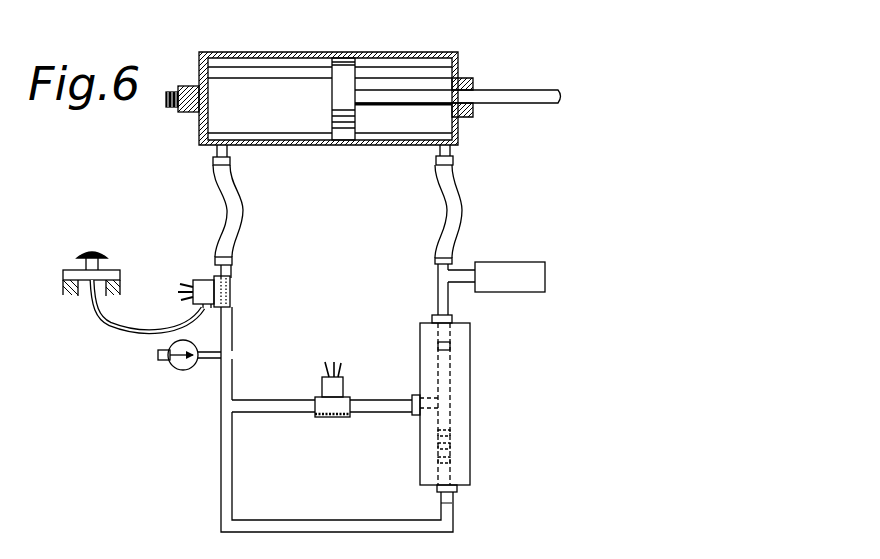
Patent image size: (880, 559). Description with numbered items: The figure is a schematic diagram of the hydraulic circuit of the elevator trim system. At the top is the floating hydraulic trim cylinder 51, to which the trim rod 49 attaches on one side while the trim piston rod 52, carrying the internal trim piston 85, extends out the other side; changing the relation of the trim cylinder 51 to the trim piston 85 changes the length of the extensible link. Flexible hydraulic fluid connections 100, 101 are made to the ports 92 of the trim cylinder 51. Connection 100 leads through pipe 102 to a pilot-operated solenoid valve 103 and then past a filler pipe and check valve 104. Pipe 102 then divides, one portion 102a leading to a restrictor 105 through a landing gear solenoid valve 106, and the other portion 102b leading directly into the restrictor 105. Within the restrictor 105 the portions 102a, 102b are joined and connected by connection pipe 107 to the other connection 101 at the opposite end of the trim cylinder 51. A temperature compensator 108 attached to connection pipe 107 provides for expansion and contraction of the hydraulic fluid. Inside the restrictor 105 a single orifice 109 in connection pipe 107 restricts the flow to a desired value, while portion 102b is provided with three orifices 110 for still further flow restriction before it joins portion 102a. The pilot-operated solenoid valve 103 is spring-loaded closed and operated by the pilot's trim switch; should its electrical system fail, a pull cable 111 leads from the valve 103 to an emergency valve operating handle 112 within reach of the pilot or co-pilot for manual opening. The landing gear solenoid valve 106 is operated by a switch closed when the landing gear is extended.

The hydraulic trim cylinder 51 is at (307, 52).
The trim piston 85 is at (358, 56).
The trim piston rod 52 is at (510, 95).
The trim rod 49 is at (168, 108).
The ports 92 is at (228, 152).
The flexible hydraulic fluid connection 100 is at (240, 210).
The flexible hydraulic fluid connection 101 is at (462, 208).
The pipe 102 is at (233, 268).
The pilot-operated solenoid valve 103 is at (203, 277).
The emergency valve operating handle 112 is at (107, 260).
The pull cable 111 is at (131, 333).
The check valve 104 is at (169, 364).
The pipe portion 102a is at (250, 408).
The pipe portion 102b is at (297, 522).
The landing gear solenoid valve 106 is at (352, 435).
The restrictor 105 is at (474, 381).
The connection pipe 107 is at (437, 292).
The temperature compensator 108 is at (506, 258).
The orifice 109 is at (450, 338).
The orifices 110 is at (457, 458).